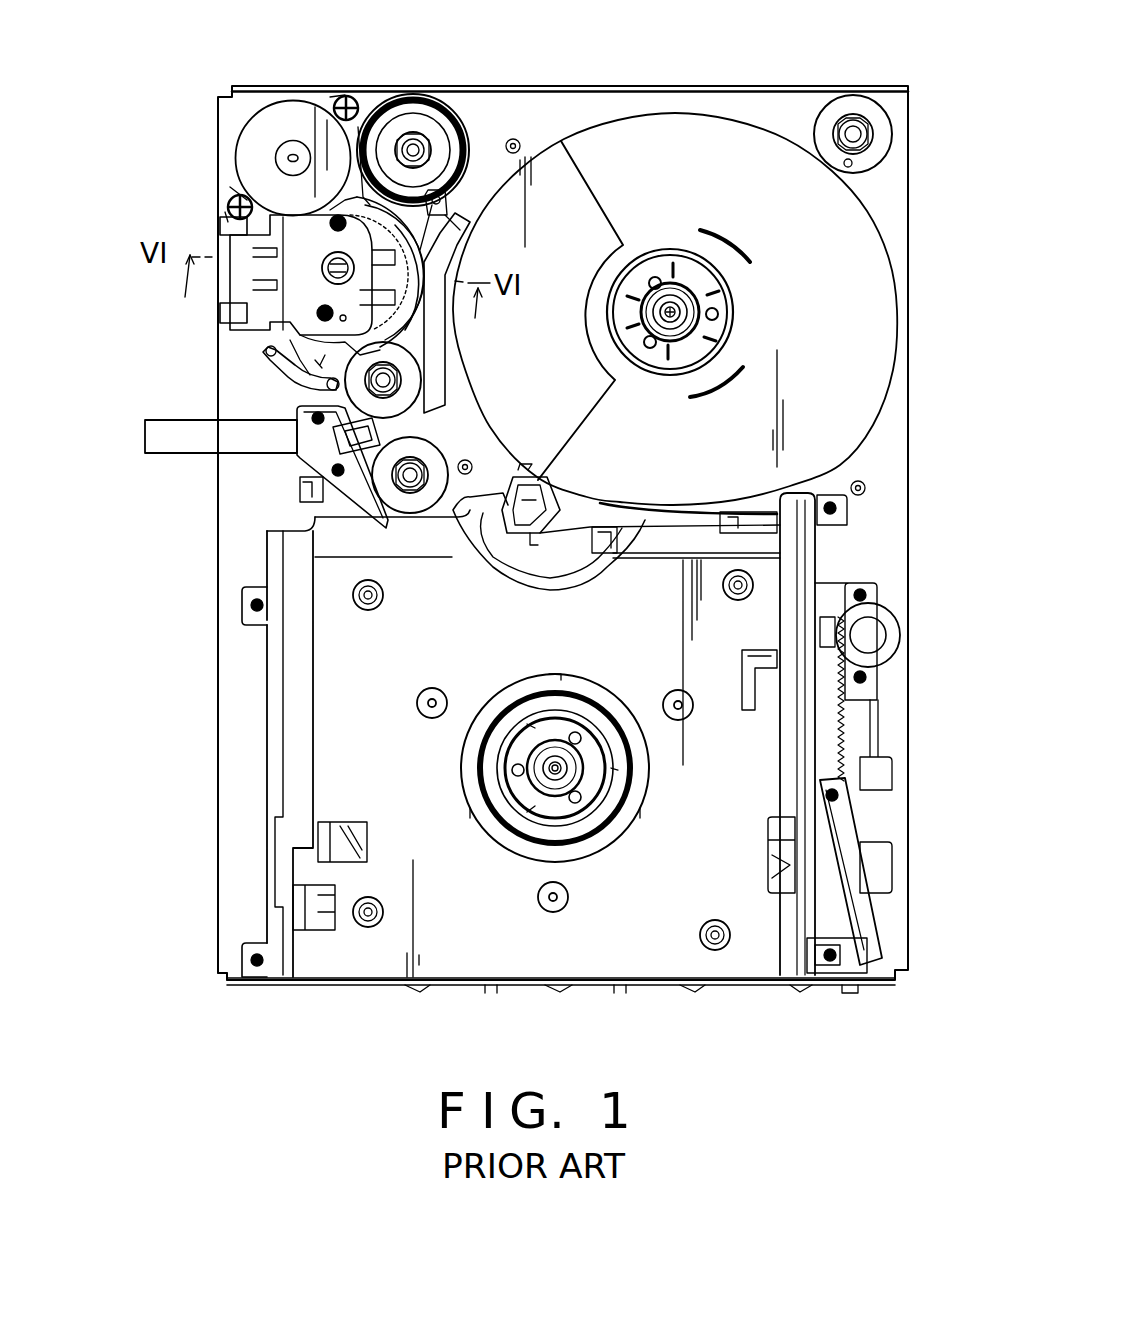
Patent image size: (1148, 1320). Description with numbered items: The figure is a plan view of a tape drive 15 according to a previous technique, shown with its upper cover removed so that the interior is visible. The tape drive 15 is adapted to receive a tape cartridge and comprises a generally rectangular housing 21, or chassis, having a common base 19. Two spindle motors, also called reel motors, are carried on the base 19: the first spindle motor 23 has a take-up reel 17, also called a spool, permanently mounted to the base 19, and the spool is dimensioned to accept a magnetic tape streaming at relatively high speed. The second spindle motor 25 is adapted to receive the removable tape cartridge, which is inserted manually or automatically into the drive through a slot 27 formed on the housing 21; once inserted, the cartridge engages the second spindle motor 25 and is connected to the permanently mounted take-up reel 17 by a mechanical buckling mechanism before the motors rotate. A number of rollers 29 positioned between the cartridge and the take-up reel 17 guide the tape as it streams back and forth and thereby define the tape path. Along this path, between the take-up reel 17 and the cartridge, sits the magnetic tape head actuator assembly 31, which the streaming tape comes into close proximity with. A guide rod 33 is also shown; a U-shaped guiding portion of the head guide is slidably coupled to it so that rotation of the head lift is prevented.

The tape drive 15 is at (195, 987).
The take-up reel 17 is at (840, 222).
The base 19 is at (240, 654).
The housing 21 is at (213, 733).
The first spindle motor 23 is at (714, 312).
The second spindle motor 25 is at (592, 788).
The slot 27 is at (793, 917).
The rollers 29 is at (421, 124).
The magnetic tape head actuator assembly 31 is at (255, 340).
The guide rod 33 is at (280, 378).